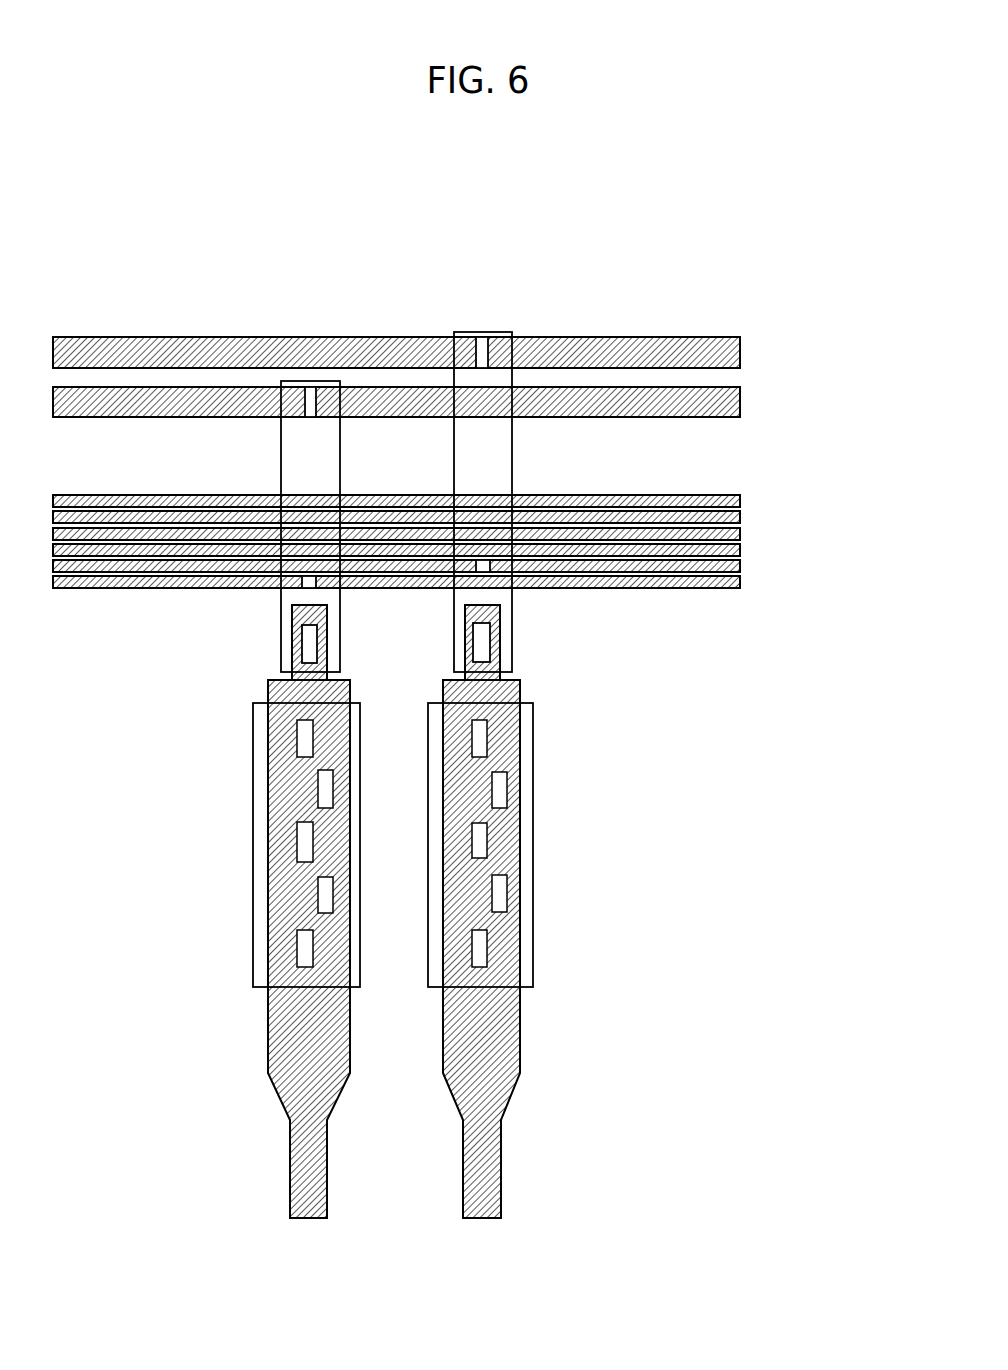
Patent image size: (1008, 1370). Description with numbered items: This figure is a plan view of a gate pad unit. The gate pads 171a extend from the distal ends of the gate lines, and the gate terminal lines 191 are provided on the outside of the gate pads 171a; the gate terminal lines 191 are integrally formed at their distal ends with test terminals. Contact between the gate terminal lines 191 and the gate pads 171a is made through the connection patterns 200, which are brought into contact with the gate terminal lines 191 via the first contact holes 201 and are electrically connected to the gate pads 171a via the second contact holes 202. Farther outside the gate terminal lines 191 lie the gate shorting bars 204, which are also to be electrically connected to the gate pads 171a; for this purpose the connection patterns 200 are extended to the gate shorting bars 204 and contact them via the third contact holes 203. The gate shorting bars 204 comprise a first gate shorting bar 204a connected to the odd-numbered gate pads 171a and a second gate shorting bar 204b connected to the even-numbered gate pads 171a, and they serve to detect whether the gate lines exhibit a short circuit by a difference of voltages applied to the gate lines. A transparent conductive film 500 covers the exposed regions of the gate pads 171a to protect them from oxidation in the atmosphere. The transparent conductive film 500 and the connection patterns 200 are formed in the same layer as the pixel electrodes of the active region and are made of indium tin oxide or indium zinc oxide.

The gate pad 171a is at (335, 1077).
The gate terminal line 191 is at (675, 588).
The connection pattern 200 is at (333, 622).
The first contact hole 201 is at (483, 570).
The second contact hole 202 is at (482, 648).
The third contact hole 203 is at (312, 392).
The gate shorting bar 204 is at (484, 377).
The first gate shorting bar 204a is at (447, 402).
The second gate shorting bar 204b is at (741, 350).
The transparent conductive film 500 is at (443, 837).